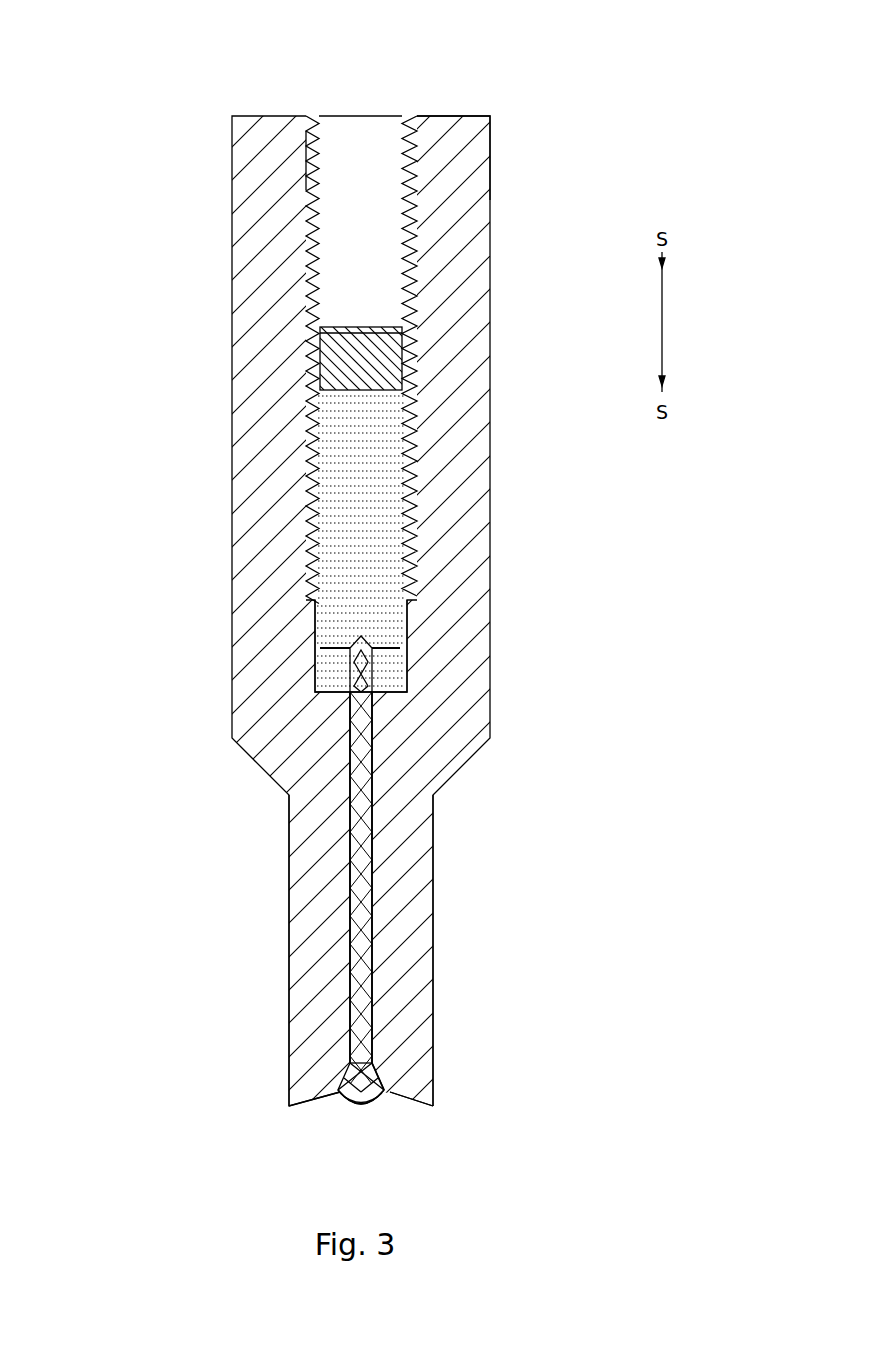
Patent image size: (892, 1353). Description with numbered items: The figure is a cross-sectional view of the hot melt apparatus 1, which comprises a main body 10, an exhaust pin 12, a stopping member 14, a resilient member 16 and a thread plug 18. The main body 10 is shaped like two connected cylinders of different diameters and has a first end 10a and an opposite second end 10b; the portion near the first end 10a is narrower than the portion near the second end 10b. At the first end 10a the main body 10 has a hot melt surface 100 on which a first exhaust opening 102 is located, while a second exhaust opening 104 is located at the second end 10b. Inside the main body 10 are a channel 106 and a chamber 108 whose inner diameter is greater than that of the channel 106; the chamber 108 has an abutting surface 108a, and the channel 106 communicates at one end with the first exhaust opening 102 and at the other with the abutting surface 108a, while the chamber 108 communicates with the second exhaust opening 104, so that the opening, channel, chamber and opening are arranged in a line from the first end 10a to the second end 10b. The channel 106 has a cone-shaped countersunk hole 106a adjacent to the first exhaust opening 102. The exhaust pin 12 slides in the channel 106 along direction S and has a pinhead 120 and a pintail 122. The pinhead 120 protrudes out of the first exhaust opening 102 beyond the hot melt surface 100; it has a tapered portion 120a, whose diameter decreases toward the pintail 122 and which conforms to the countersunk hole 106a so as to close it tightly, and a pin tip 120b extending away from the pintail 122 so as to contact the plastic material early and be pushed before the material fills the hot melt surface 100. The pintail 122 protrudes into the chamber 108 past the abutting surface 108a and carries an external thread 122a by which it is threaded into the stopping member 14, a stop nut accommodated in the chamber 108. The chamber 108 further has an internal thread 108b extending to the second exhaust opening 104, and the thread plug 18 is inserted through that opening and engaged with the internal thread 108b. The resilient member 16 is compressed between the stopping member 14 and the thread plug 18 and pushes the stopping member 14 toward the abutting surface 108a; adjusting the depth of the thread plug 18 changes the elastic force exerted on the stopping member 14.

The hot melt apparatus 1 is at (132, 884).
The main body 10 is at (272, 743).
The first end 10a is at (403, 1103).
The second end 10b is at (456, 111).
The exhaust pin 12 is at (348, 853).
The stopping member 14 is at (330, 665).
The resilient member 16 is at (315, 406).
The thread plug 18 is at (320, 350).
The hot melt surface 100 is at (388, 1108).
The first exhaust opening 102 is at (388, 1088).
The second exhaust opening 104 is at (363, 112).
The channel 106 is at (378, 893).
The countersunk hole 106a is at (379, 1064).
The chamber 108 is at (376, 226).
The abutting surface 108a is at (376, 708).
The internal thread 108b is at (318, 163).
The pinhead 120 is at (127, 1020).
The tapered portion 120a is at (345, 1080).
The pin tip 120b is at (360, 1112).
The pintail 122 is at (358, 638).
The external thread 122a is at (372, 680).